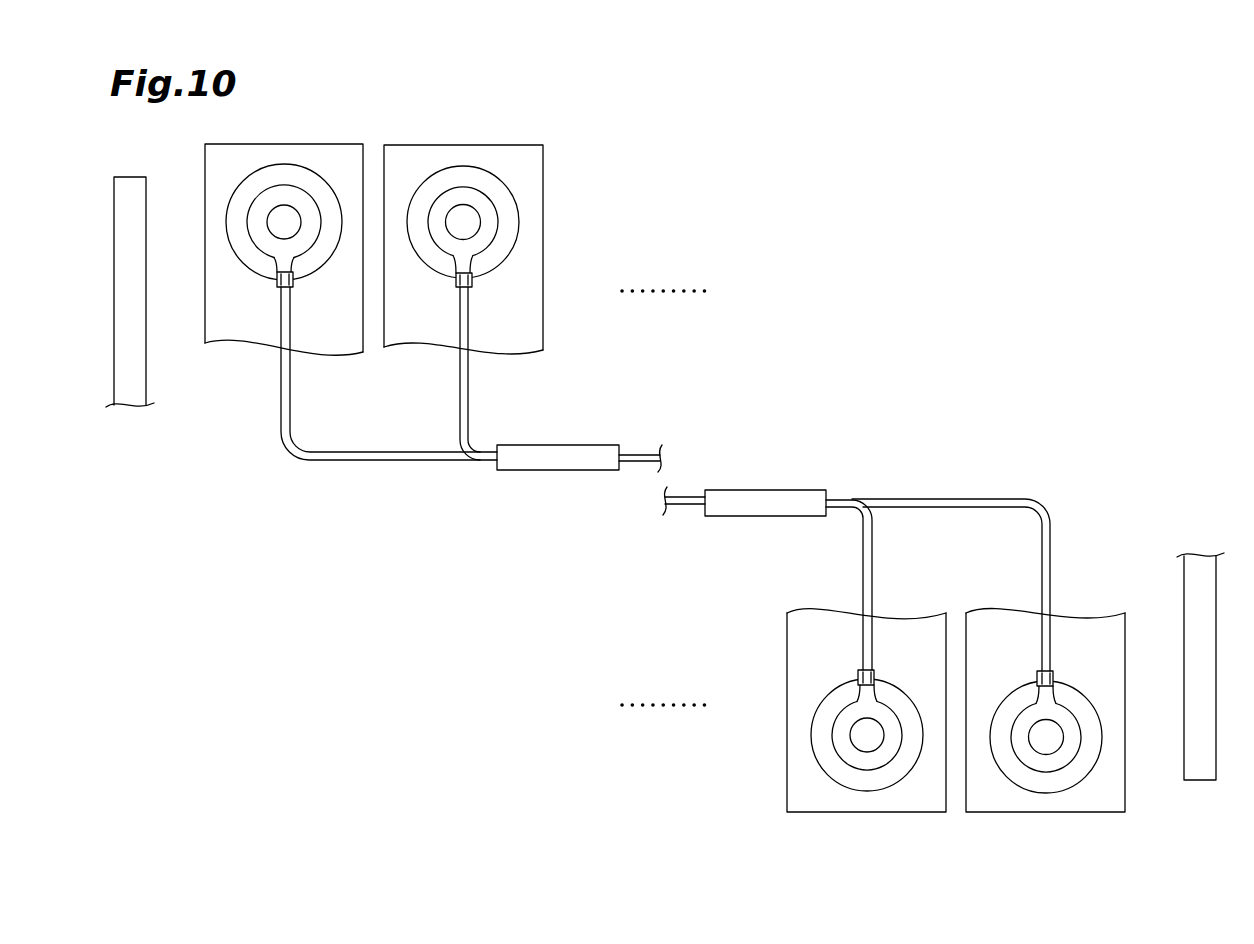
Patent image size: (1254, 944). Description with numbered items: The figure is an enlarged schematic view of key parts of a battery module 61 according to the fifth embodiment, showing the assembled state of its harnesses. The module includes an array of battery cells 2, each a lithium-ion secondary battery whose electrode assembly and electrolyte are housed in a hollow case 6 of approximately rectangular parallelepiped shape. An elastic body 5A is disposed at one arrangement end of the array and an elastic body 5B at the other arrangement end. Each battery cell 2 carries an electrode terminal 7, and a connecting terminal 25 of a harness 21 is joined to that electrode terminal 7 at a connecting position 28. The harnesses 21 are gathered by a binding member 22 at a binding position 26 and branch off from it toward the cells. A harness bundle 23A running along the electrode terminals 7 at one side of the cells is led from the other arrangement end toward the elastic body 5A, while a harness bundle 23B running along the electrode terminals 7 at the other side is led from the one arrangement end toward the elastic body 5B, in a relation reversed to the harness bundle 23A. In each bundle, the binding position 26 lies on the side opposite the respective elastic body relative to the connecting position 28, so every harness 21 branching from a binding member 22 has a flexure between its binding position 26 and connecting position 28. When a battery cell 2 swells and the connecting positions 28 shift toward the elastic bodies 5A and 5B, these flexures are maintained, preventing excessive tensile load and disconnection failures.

The battery cell 2 is at (330, 145).
The elastic body 5A is at (132, 177).
The elastic body 5B is at (1198, 780).
The hollow case 6 is at (205, 327).
The electrode terminal 7 is at (233, 195).
The harness 21 is at (281, 391).
The binding member 22 is at (586, 445).
The harness bundle 23A is at (641, 428).
The harness bundle 23B is at (694, 522).
The connecting terminal 25 is at (248, 220).
The binding position 26 is at (497, 444).
The connecting position 28 is at (277, 278).
The battery module 61 is at (643, 143).